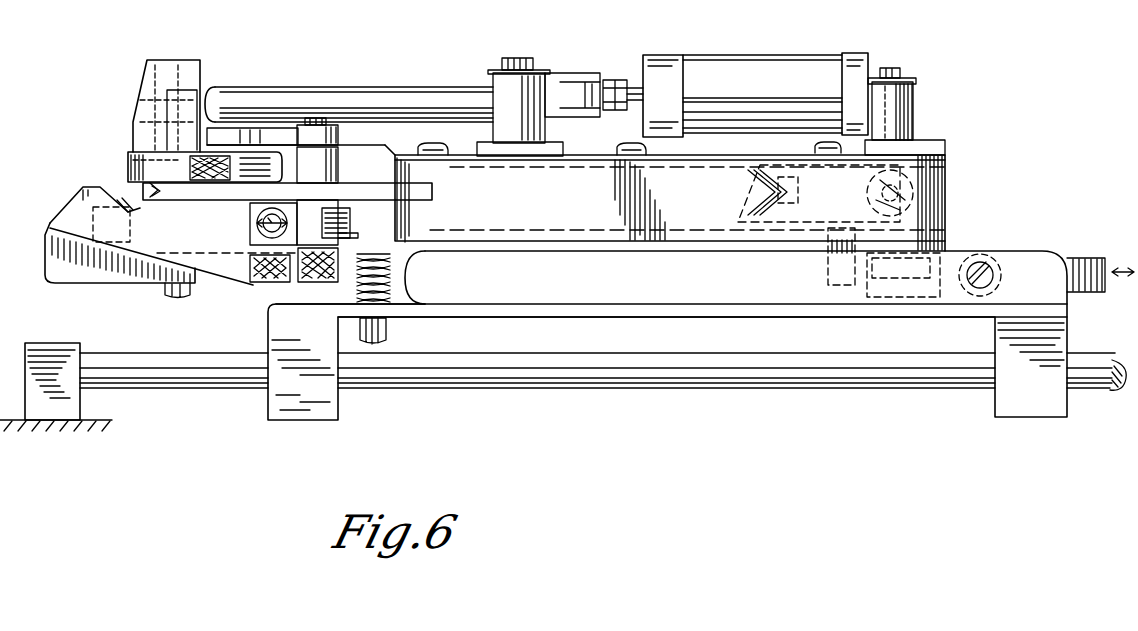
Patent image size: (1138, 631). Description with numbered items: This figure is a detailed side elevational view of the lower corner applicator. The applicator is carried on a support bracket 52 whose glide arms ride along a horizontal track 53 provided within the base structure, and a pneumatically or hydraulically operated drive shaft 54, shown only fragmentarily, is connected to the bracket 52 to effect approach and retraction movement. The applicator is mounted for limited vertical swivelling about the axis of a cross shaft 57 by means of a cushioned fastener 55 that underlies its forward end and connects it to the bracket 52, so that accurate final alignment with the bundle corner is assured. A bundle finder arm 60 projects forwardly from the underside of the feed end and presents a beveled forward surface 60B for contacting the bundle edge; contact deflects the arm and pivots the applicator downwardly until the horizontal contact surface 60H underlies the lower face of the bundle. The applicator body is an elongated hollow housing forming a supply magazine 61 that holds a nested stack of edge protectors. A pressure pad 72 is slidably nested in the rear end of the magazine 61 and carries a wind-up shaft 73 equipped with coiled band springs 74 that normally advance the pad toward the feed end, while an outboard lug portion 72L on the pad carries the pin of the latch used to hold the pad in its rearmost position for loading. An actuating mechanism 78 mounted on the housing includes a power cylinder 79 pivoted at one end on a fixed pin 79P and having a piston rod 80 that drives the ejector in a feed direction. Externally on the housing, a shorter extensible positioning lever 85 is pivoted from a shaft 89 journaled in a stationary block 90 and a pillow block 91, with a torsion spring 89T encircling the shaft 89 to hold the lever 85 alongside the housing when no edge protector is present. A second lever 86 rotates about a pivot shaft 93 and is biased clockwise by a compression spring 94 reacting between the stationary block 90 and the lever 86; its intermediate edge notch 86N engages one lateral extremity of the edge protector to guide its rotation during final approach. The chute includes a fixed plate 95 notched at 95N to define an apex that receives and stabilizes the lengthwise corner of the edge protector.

The support bracket 52 is at (667, 351).
The horizontal track 53 is at (600, 375).
The drive shaft 54 is at (1088, 262).
The cushioned fastener 55 is at (403, 280).
The cross shaft 57 is at (980, 263).
The bundle finder arm 60 is at (90, 265).
The beveled forward surface 60B is at (58, 212).
The horizontal contact surface 60H is at (82, 182).
The supply magazine 61 is at (589, 219).
The pressure pad 72 is at (760, 240).
The outboard lug portion 72L is at (826, 250).
The wind-up shaft 73 is at (935, 195).
The coiled band springs 74 is at (918, 212).
The actuating mechanism 78 is at (755, 73).
The power cylinder 79 is at (760, 101).
The fixed pin 79P is at (888, 78).
The piston rod 80 is at (622, 86).
The positioning lever 85 is at (160, 176).
The lever 86 is at (228, 258).
The intermediate edge notch 86N is at (114, 220).
The shaft 89 is at (318, 120).
The torsion spring 89T is at (366, 222).
The stationary block 90 is at (310, 284).
The pillow block 91 is at (270, 134).
The pivot shaft 93 is at (252, 222).
The compression spring 94 is at (268, 284).
The fixed plate 95 is at (287, 218).
The notch 95N is at (158, 202).